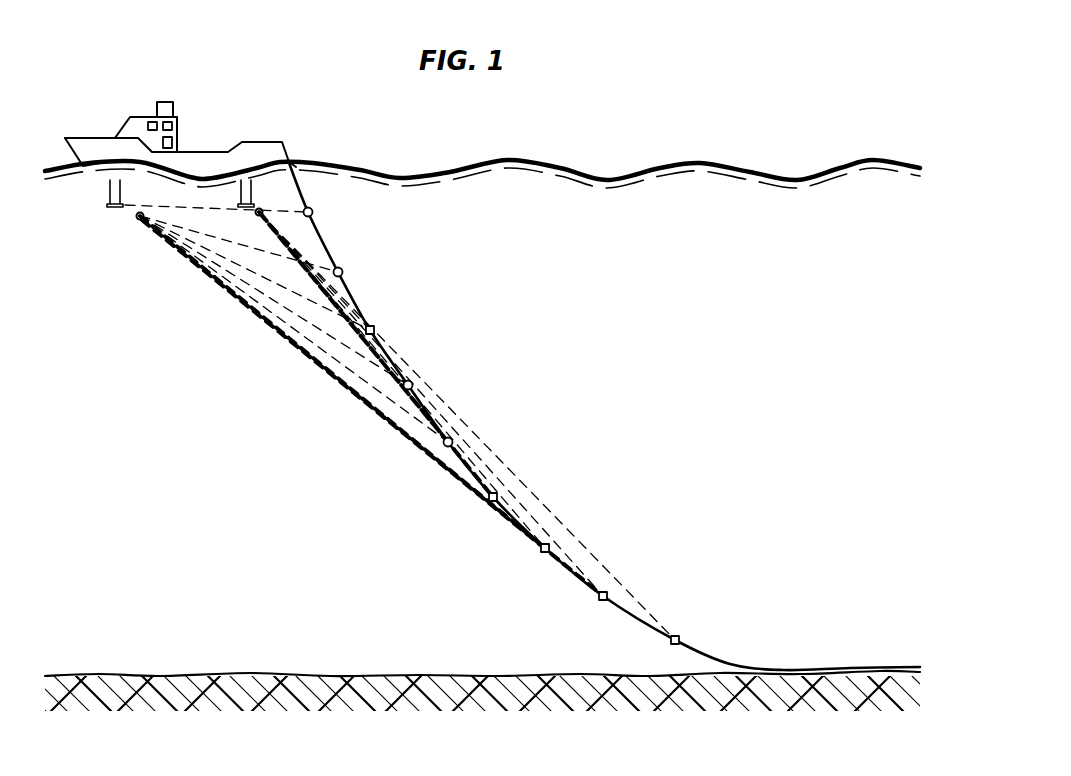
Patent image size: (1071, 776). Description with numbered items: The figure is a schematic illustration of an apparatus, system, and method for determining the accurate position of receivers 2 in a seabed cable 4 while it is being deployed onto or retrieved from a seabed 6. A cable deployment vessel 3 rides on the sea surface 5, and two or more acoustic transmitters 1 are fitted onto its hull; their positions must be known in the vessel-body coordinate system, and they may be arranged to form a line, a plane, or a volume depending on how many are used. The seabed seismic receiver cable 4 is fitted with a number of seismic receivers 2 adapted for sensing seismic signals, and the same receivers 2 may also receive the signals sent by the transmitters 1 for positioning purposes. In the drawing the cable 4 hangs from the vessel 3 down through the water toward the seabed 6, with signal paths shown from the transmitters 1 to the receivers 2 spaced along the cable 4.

The acoustic transmitters 1 is at (242, 192).
The receivers 2 is at (374, 327).
The cable deployment vessel 3 is at (82, 136).
The seabed cable 4 is at (334, 178).
The sea surface 5 is at (687, 165).
The seabed 6 is at (170, 674).